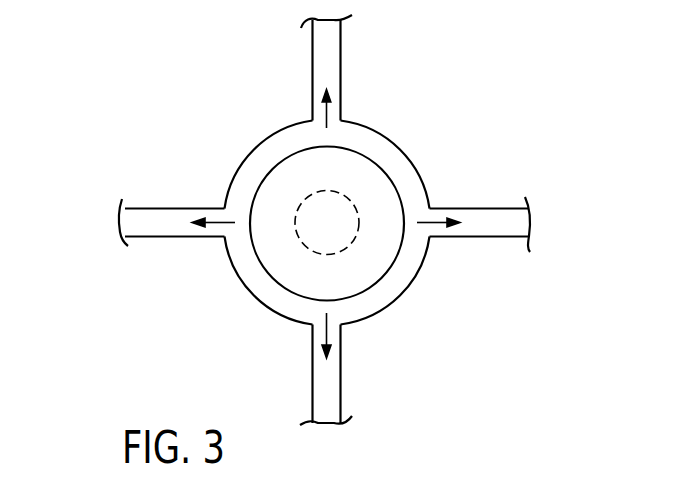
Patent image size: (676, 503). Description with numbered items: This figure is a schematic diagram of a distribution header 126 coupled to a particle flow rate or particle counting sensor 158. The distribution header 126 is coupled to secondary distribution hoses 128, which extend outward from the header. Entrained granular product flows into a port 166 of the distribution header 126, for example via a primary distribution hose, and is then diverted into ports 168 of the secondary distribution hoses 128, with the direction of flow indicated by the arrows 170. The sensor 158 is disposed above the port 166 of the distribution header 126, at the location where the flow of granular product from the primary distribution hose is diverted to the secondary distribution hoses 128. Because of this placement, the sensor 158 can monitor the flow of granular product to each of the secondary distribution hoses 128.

The distribution header 126 is at (329, 225).
The secondary distribution hoses 128 is at (310, 70).
The particle flow rate or particle counting sensor 158 is at (383, 273).
The port 166 is at (360, 186).
The ports 168 is at (210, 189).
The arrows 170 is at (329, 115).